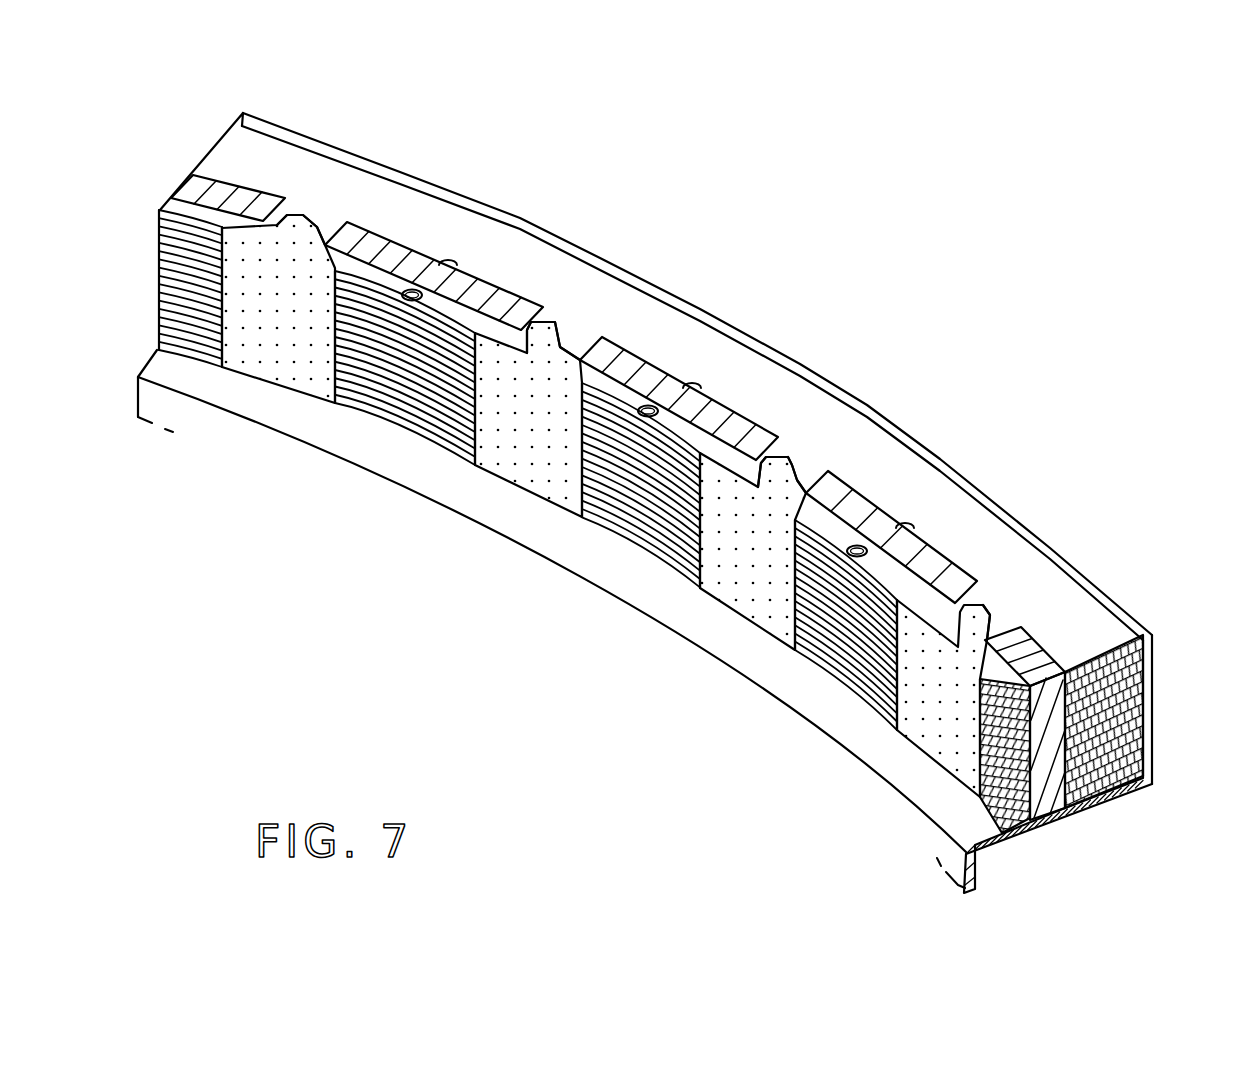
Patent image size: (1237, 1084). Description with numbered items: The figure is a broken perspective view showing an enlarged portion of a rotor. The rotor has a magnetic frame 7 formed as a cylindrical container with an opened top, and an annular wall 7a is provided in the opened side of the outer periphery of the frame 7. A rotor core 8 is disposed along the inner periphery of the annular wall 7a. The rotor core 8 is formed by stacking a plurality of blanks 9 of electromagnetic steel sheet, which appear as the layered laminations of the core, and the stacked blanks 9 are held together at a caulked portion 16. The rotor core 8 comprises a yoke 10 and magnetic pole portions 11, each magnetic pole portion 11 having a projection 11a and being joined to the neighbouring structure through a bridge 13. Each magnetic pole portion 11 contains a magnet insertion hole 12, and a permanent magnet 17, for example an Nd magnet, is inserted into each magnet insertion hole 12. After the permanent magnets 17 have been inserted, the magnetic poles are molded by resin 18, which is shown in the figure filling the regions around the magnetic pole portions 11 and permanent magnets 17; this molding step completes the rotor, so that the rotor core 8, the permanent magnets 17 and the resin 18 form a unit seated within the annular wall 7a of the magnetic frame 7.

The magnetic frame 7 is at (966, 882).
The annular wall 7a is at (1153, 672).
The rotor core 8 is at (220, 136).
The blank 9 is at (651, 521).
The yoke 10 is at (750, 383).
The magnetic pole portion 11 is at (680, 430).
The projection 11a is at (278, 243).
The magnet insertion hole 12 is at (492, 279).
The bridge 13 is at (786, 448).
The caulked portion 16 is at (410, 300).
The permanent magnet 17 is at (403, 243).
The resin 18 is at (520, 373).